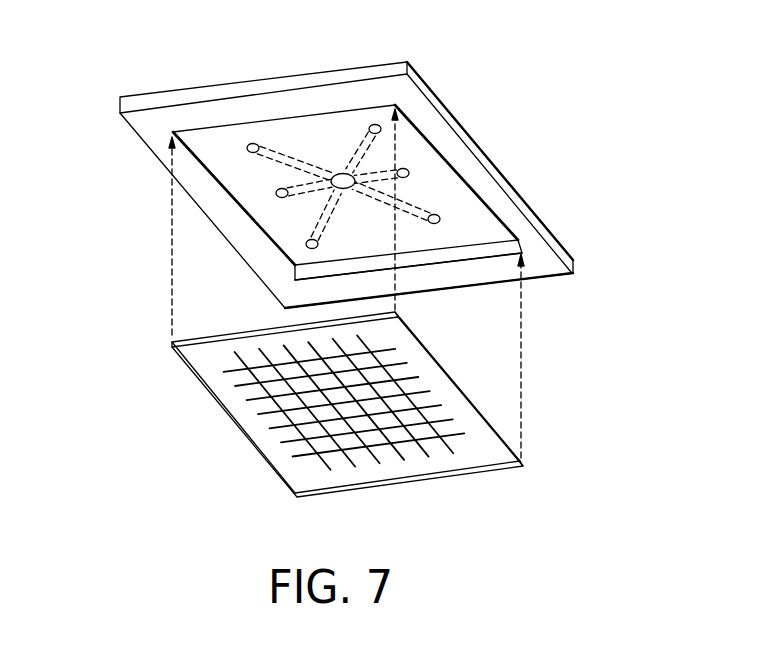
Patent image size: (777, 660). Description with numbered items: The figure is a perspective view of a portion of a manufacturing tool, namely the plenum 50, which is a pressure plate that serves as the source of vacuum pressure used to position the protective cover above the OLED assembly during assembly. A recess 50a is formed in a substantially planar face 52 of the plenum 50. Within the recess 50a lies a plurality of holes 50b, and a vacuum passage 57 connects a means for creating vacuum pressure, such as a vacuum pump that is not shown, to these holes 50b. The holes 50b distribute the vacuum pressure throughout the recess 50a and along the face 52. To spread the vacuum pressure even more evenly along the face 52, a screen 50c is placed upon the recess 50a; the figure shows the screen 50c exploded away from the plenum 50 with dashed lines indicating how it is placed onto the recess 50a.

The plenum 50 is at (543, 120).
The planar face 52 is at (143, 120).
The recess 50a is at (228, 157).
The holes 50b is at (252, 143).
The vacuum passage 57 is at (340, 174).
The screen 50c is at (233, 385).